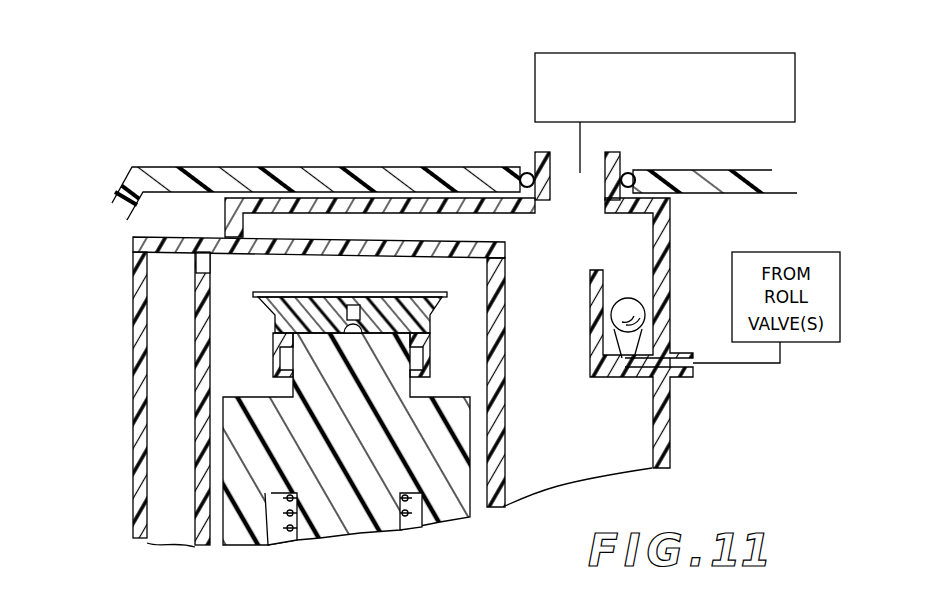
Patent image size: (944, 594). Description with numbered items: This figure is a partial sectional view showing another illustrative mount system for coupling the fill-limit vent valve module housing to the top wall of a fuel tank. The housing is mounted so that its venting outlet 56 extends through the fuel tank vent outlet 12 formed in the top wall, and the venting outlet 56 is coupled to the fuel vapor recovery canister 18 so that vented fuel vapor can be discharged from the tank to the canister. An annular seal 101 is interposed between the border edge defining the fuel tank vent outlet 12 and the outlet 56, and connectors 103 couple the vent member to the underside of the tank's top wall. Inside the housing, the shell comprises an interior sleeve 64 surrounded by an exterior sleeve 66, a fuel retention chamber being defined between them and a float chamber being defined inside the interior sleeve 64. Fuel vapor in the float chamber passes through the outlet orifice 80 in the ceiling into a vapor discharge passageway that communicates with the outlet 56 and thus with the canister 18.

The fuel tank vent outlet 12 is at (527, 172).
The fuel vapor recovery canister 18 is at (535, 88).
The venting outlet 56 is at (621, 156).
The interior sleeve 64 is at (507, 308).
The exterior sleeve 66 is at (133, 402).
The outlet orifice 80 is at (392, 250).
The annular seal 101 is at (636, 174).
The connectors 103 is at (272, 194).